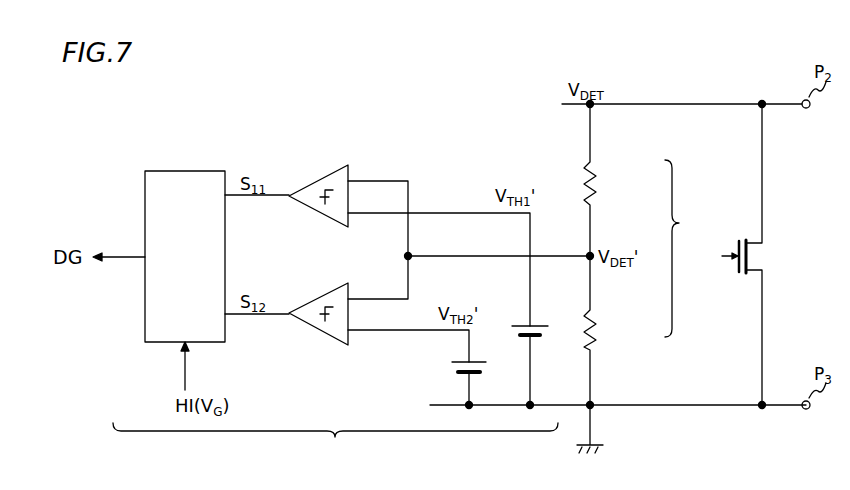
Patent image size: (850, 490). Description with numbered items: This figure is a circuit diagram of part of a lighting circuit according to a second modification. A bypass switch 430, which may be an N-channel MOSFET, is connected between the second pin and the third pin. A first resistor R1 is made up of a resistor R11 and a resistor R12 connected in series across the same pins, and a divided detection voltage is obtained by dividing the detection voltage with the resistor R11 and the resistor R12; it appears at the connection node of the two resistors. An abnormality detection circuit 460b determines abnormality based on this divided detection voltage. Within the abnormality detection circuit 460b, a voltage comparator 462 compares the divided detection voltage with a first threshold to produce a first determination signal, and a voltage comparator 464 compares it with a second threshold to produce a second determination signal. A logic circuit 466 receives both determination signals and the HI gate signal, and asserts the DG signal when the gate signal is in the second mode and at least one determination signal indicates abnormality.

The logic circuit 466 is at (180, 170).
The voltage comparator 462 is at (313, 178).
The voltage comparator 464 is at (313, 295).
The bypass switch 430 is at (769, 254).
The abnormality detection circuit 460b is at (335, 446).
The resistor R11 is at (601, 182).
The resistor R12 is at (601, 321).
The first resistor R1 is at (683, 248).